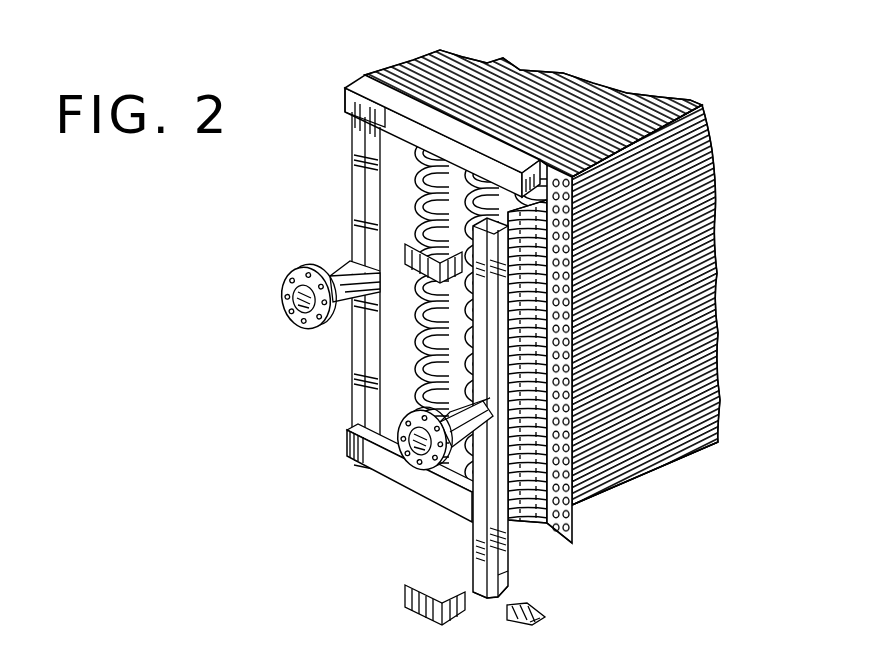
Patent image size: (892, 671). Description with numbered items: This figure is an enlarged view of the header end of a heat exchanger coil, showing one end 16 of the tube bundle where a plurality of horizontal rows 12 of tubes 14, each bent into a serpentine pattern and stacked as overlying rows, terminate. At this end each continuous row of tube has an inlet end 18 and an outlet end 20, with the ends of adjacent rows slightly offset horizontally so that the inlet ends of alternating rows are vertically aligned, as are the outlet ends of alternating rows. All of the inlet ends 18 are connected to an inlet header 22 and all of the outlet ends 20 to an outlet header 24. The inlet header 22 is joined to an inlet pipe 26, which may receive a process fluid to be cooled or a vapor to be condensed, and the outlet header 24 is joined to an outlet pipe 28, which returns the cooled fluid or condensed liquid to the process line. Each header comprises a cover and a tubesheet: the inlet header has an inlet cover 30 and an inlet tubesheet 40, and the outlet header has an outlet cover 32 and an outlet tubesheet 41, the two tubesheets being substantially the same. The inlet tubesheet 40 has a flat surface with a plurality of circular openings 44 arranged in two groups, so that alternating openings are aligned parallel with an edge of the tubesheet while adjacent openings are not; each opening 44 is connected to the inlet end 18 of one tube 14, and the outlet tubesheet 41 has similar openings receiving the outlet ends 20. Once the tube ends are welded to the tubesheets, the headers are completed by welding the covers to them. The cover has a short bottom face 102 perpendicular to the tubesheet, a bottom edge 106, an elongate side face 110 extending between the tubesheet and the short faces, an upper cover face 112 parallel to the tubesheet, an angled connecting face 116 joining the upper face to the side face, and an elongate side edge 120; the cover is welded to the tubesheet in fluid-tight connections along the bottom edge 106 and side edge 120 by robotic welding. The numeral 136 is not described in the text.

The horizontal rows 12 is at (397, 155).
The tubes 14 is at (705, 104).
The end 16 is at (416, 90).
The inlet end 18 is at (573, 177).
The outlet end 20 is at (388, 88).
The inlet header 22 is at (471, 543).
The outlet header 24 is at (357, 393).
The inlet pipe 26 is at (413, 485).
The outlet pipe 28 is at (333, 267).
The inlet cover 30 is at (472, 522).
The outlet cover 32 is at (357, 183).
The inlet tubesheet 40 is at (572, 535).
The outlet tubesheet 41 is at (380, 88).
The openings 44 is at (575, 520).
The bottom face 102 is at (537, 622).
The bottom edge 106 is at (535, 612).
The elongate side face 110 is at (505, 530).
The upper cover face 112 is at (475, 565).
The angled connecting face 116 is at (482, 592).
The elongate side edge 120 is at (510, 578).
The post bottom end 136 is at (508, 593).